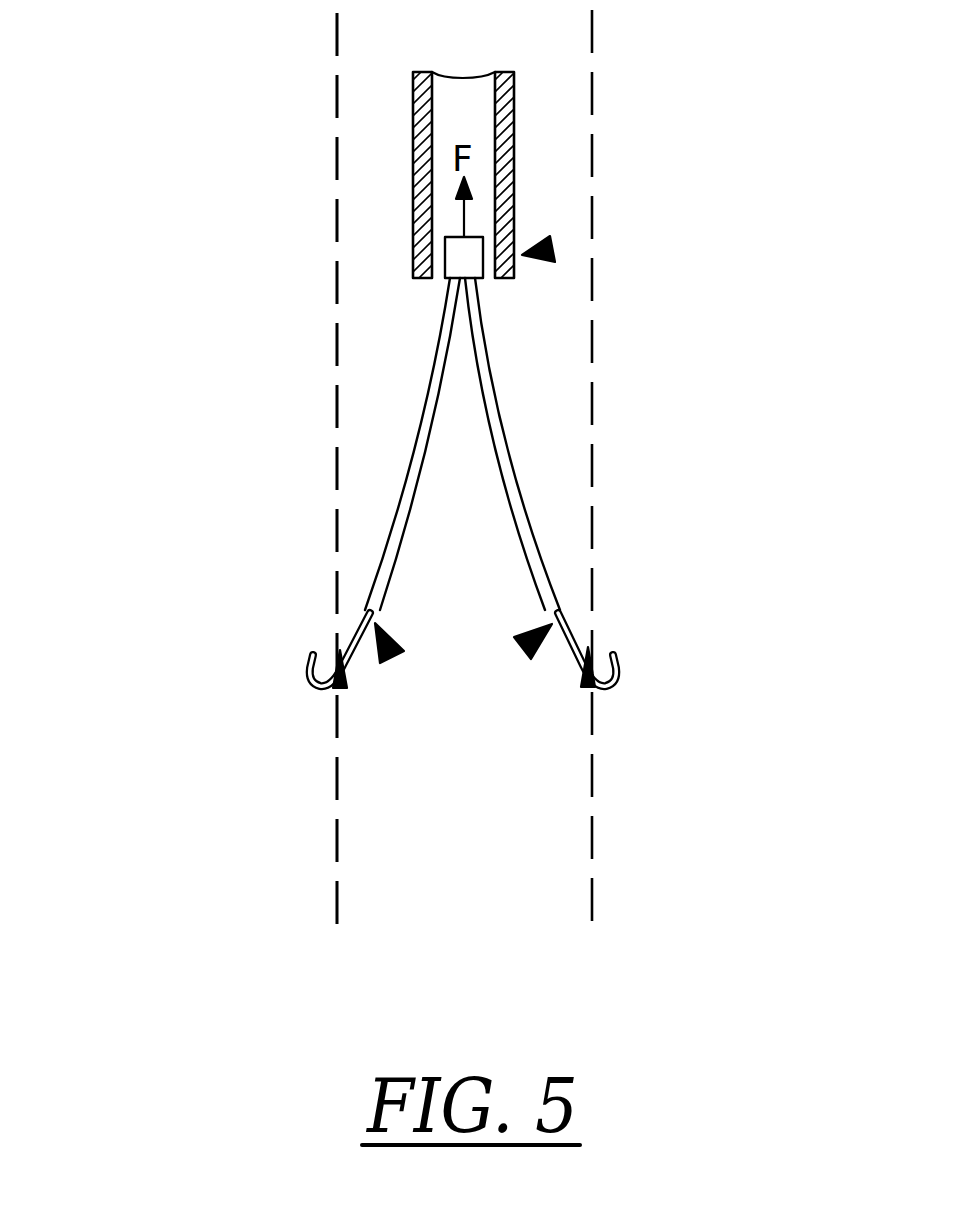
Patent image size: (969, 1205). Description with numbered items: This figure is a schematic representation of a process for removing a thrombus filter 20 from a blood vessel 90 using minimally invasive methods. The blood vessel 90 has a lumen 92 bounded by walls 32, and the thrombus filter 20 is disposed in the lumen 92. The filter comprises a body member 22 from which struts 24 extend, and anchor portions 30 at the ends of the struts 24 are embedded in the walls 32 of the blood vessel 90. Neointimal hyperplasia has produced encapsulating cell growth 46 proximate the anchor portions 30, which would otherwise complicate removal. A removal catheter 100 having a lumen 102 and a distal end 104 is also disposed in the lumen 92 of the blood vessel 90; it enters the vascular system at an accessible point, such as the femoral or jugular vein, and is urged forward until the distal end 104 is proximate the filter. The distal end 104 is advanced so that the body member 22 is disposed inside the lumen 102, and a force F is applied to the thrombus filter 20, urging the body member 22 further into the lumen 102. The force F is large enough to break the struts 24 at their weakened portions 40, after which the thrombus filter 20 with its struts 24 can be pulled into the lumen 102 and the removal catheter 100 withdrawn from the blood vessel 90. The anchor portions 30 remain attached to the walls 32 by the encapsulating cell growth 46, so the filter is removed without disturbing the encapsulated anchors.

The thrombus filter 20 is at (462, 559).
The body member 22 is at (483, 280).
The struts 24 is at (410, 462).
The anchor portions 30 is at (278, 692).
The walls 32 is at (337, 85).
The weakened portions 40 is at (392, 657).
The encapsulating cell growth 46 is at (340, 688).
The blood vessel 90 is at (337, 213).
The lumen 92 is at (581, 171).
The removal catheter 100 is at (513, 195).
The lumen 102 is at (472, 115).
The distal end 104 is at (550, 249).